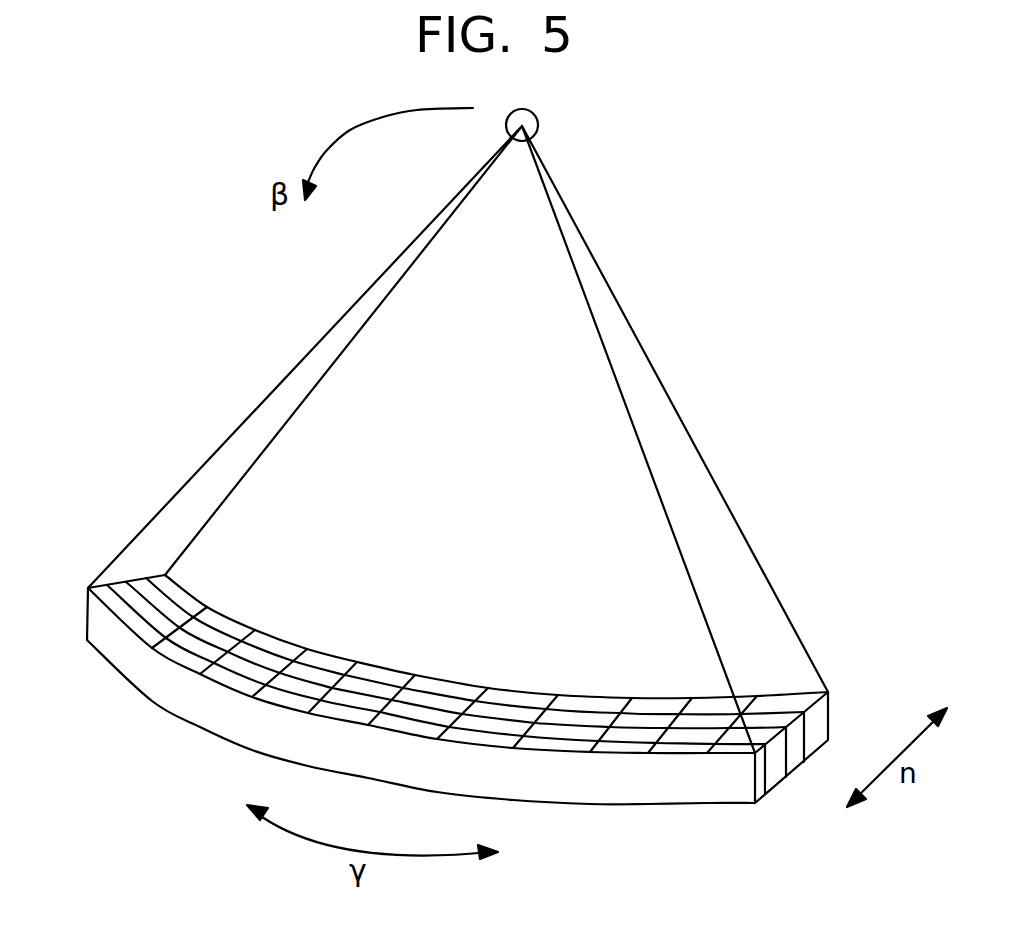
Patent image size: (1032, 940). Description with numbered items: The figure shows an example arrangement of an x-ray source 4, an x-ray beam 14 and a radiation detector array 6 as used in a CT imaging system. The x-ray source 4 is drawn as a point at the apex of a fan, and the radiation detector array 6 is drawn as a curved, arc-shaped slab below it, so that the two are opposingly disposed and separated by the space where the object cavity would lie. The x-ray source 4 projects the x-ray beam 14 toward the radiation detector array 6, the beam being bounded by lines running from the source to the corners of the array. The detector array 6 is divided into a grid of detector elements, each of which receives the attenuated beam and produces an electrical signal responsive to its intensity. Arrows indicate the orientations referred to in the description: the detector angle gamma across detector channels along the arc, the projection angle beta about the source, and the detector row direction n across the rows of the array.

The x-ray source 4 is at (538, 118).
The x-ray beam 14 is at (633, 328).
The radiation detector array 6 is at (127, 663).